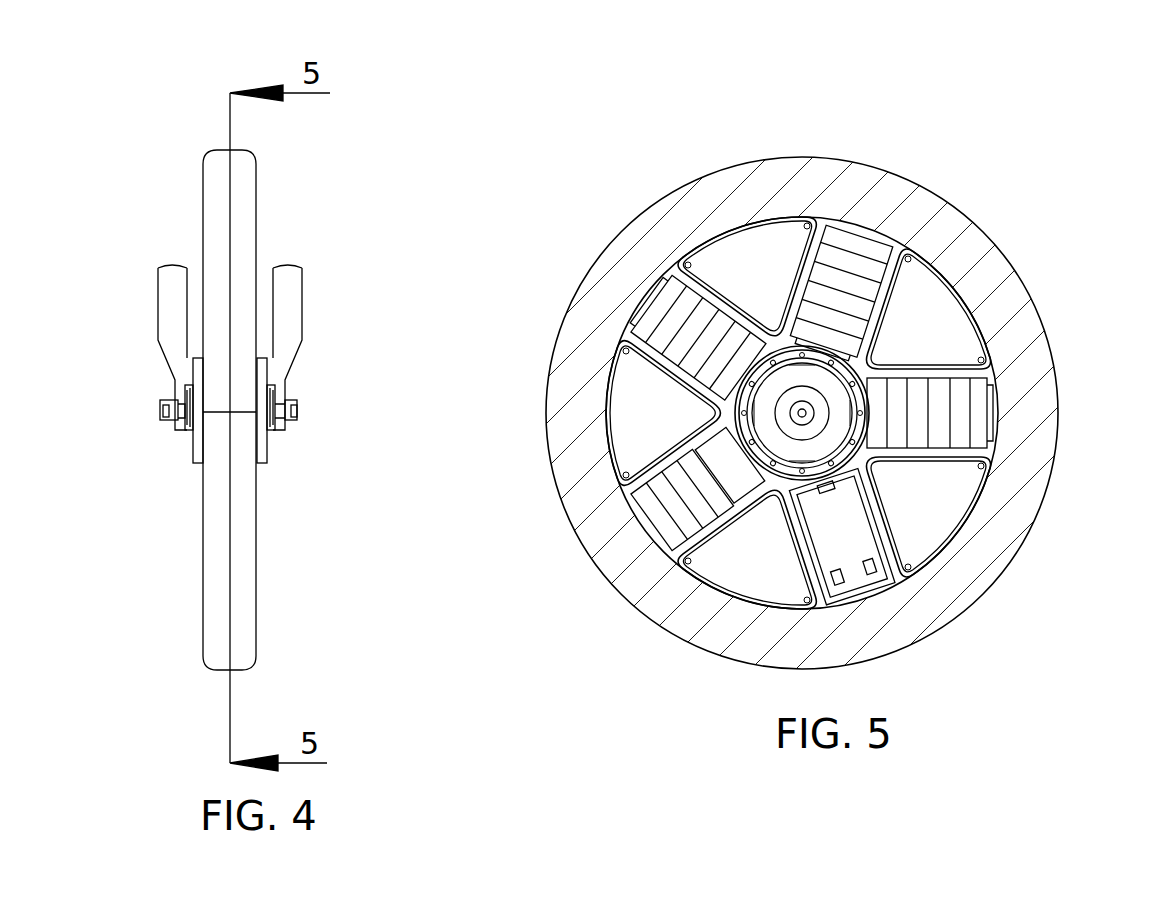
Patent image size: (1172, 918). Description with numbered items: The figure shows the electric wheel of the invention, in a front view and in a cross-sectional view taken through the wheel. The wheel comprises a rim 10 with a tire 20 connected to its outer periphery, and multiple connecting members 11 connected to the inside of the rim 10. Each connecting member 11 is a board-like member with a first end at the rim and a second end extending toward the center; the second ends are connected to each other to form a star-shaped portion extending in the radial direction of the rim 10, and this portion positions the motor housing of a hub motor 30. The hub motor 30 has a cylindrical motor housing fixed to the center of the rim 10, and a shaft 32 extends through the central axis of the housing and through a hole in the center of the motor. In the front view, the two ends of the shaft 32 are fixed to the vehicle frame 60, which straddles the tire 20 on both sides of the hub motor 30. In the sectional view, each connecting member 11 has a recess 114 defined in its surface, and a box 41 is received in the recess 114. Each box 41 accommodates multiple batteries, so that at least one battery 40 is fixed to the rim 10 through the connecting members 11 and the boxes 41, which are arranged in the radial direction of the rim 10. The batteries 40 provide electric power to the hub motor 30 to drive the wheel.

In FIG. 5, the rim 10 is at (740, 223).
In FIG. 5, the connecting member 11 is at (720, 267).
In FIG. 4, the tire 20 is at (250, 219).
In FIG. 5, the tire 20 is at (780, 162).
In FIG. 4, the hub motor 30 is at (190, 372).
In FIG. 5, the hub motor 30 is at (855, 463).
In FIG. 4, the shaft 32 is at (297, 398).
In FIG. 5, the battery 40 is at (860, 243).
In FIG. 5, the box 41 is at (897, 288).
In FIG. 4, the vehicle frame 60 is at (172, 298).
In FIG. 5, the recess 114 is at (885, 317).